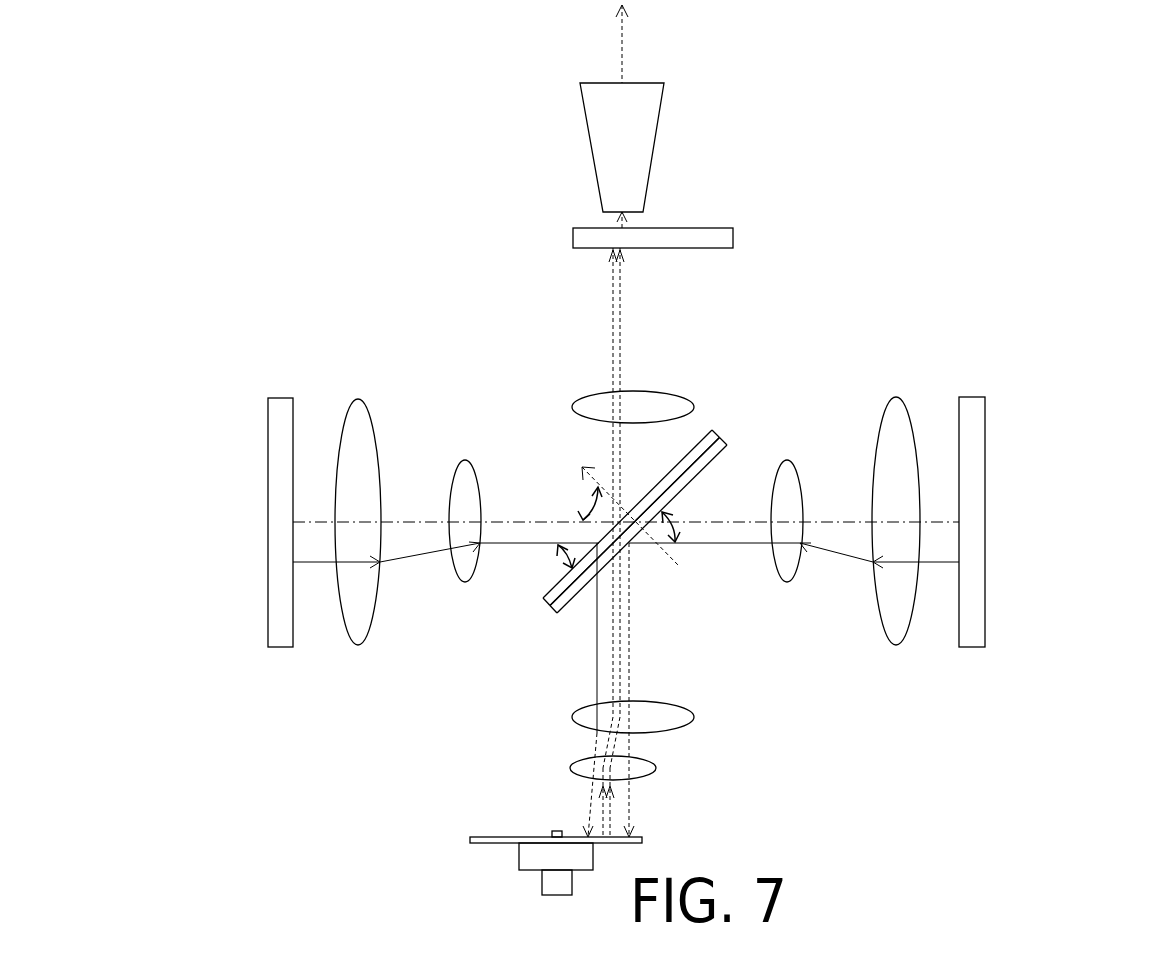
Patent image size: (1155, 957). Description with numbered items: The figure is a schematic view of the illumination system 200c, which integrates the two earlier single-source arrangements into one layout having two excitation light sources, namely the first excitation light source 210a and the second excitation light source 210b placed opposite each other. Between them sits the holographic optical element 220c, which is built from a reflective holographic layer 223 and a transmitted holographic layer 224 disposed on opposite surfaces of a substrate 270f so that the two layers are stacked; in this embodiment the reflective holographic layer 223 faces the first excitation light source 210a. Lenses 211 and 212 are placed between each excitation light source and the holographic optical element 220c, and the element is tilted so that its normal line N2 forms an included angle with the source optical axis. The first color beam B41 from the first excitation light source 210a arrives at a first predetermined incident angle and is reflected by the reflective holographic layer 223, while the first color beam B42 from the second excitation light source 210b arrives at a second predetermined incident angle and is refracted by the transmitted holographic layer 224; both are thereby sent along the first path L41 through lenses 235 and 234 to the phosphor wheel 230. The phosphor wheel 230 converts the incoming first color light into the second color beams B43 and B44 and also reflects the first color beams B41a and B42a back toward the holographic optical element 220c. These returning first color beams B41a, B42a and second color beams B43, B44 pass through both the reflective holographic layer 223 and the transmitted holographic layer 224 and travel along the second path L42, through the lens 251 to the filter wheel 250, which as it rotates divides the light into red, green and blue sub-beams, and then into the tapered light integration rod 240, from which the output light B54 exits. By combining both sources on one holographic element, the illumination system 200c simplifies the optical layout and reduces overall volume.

The illumination system 200c is at (157, 115).
The light integration rod 240 is at (636, 120).
The output light beam B54 is at (623, 43).
The filter wheel 250 is at (720, 238).
The lens 251 is at (592, 402).
The holographic optical element 220c is at (732, 460).
The transmitted holographic layer 224 is at (716, 428).
The reflective holographic layer 223 is at (725, 445).
The second excitation light source 210b is at (280, 397).
The first excitation light source 210a is at (968, 448).
The lens 211 is at (357, 640).
The lens 212 is at (466, 478).
The first color beam B42 is at (313, 565).
The first color beam B41 is at (938, 565).
The first path L41 is at (660, 620).
The second path L42 is at (583, 445).
The second color beam B43 is at (622, 660).
The second color beam B44 is at (723, 482).
The first color beam B41a is at (630, 745).
The first color beam B42a is at (744, 777).
The lens 235 is at (575, 718).
The lens 234 is at (574, 768).
The phosphor wheel 230 is at (494, 836).
The normal line N2 is at (677, 558).
The substrate 270f is at (548, 607).